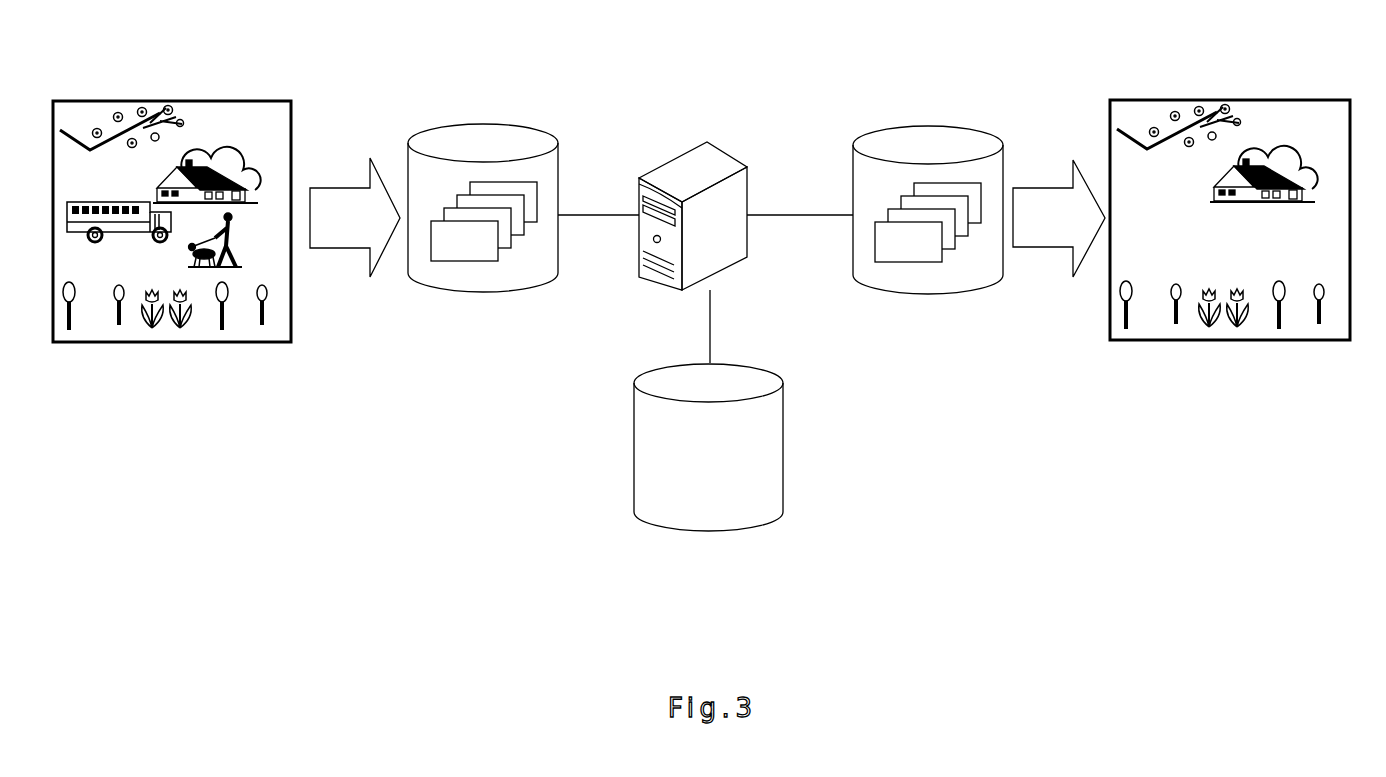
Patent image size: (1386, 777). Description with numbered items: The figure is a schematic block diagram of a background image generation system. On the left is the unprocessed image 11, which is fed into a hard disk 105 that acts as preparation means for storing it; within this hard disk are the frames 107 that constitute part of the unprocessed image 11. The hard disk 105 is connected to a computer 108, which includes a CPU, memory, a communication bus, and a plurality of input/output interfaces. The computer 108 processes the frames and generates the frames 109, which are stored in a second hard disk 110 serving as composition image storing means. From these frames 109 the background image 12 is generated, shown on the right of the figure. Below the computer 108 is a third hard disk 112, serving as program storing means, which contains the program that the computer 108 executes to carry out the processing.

The unprocessed image 11 is at (202, 98).
The background image 12 is at (1227, 100).
The hard disk 105 is at (482, 123).
The frames 107 is at (545, 169).
The computer 108 is at (718, 153).
The frames 109 is at (990, 177).
The hard disk 110 is at (927, 123).
The hard disk 112 is at (708, 531).